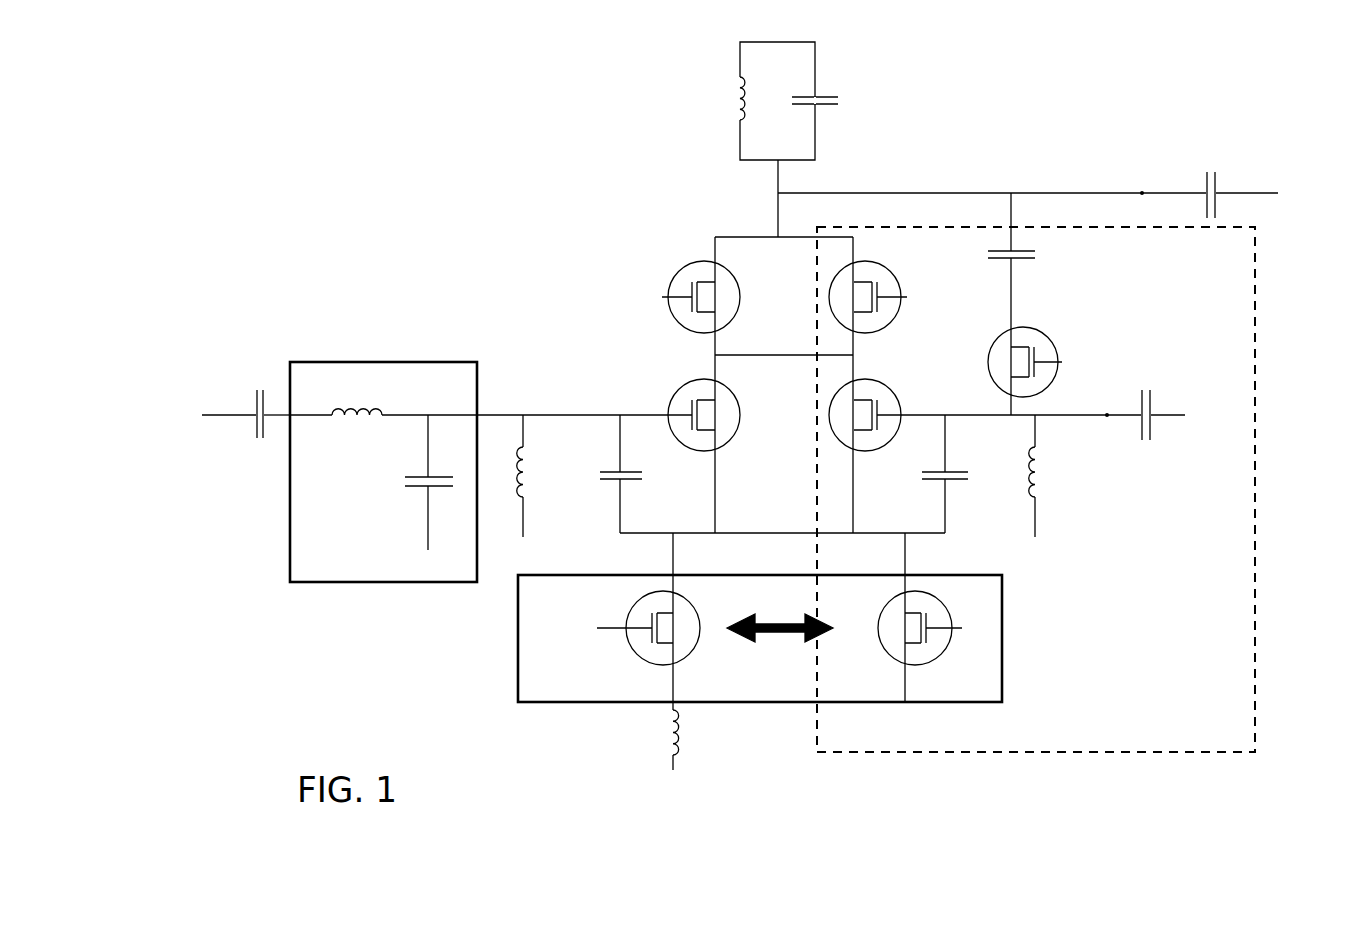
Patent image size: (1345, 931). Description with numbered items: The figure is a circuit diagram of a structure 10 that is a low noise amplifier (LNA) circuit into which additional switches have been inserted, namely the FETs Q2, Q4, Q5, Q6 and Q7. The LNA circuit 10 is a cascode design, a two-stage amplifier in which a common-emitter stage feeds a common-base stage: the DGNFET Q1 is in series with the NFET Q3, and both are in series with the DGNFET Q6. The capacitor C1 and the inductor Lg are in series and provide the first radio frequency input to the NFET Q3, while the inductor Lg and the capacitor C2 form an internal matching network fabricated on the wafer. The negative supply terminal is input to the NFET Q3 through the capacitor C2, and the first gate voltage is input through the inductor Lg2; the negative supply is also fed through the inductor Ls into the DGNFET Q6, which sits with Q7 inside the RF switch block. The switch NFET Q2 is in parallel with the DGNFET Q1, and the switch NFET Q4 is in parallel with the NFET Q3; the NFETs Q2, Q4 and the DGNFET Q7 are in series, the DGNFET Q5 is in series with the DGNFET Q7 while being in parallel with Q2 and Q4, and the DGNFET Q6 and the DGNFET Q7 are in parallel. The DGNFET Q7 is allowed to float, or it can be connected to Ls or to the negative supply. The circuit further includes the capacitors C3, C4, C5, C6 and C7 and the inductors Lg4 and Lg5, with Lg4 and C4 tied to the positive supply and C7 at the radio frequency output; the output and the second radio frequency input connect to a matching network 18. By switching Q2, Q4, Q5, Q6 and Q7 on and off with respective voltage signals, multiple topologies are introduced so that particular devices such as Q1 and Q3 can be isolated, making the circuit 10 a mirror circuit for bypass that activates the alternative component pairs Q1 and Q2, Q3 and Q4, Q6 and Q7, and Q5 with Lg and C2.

The LNA circuit 10 is at (466, 204).
The matching network 18 is at (1142, 180).
The capacitor C1 is at (251, 432).
The inductor Lg is at (357, 396).
The capacitor C2 is at (405, 482).
The inductor Lg2 is at (538, 476).
The capacitor C3 is at (634, 474).
The DGNFET Q1 is at (701, 297).
The NFET switch Q2 is at (868, 297).
The NFET Q3 is at (704, 415).
The NFET switch Q4 is at (865, 415).
The capacitor C5 is at (959, 474).
The DGNFET switch Q6 is at (648, 628).
The DGNFET switch Q7 is at (920, 628).
The inductor Ls is at (647, 736).
The inductor Lg4 is at (713, 98).
The capacitor C4 is at (832, 107).
The capacitor C7 is at (1184, 185).
The capacitor C6 is at (1029, 239).
The DGNFET switch Q5 is at (1025, 362).
The inductor Lg5 is at (1058, 476).